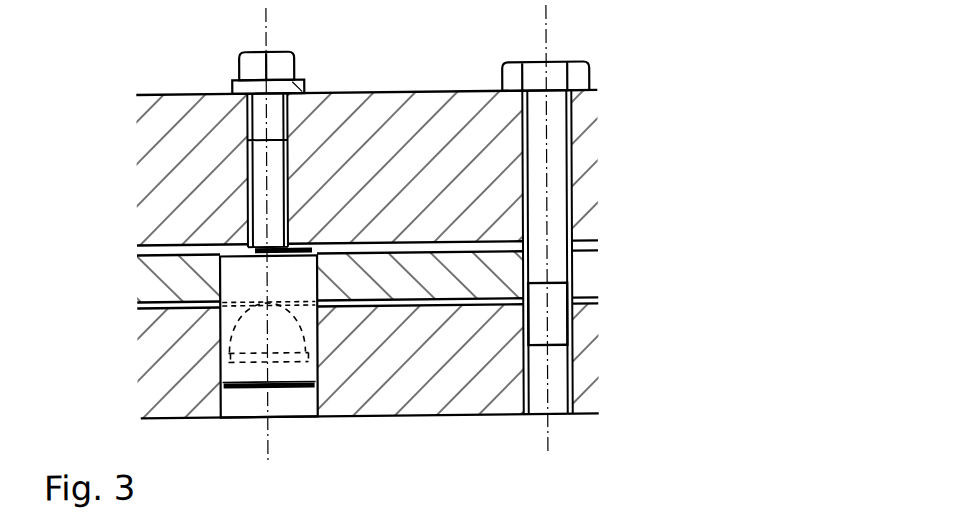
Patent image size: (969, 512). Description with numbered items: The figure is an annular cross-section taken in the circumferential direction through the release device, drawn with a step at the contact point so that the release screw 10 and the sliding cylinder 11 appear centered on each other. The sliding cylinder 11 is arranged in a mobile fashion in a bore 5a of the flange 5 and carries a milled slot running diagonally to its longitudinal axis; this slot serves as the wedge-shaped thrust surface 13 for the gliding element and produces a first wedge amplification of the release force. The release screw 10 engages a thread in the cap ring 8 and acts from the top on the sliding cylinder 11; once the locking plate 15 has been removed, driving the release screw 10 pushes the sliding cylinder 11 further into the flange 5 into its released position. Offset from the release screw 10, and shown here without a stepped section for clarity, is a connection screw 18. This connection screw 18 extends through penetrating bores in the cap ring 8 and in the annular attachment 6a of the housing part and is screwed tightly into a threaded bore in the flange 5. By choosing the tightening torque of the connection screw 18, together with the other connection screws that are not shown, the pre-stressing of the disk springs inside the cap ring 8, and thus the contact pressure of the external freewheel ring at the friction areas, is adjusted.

The flange 5 is at (473, 391).
The bore 5a is at (247, 407).
The annular attachment 6a is at (157, 261).
The cap ring 8 is at (430, 115).
The release screw 10 is at (287, 75).
The sliding cylinder 11 is at (240, 271).
The wedge-shaped thrust surface 13 is at (245, 333).
The locking plate 15 is at (165, 23).
The connection screw 18 is at (557, 123).